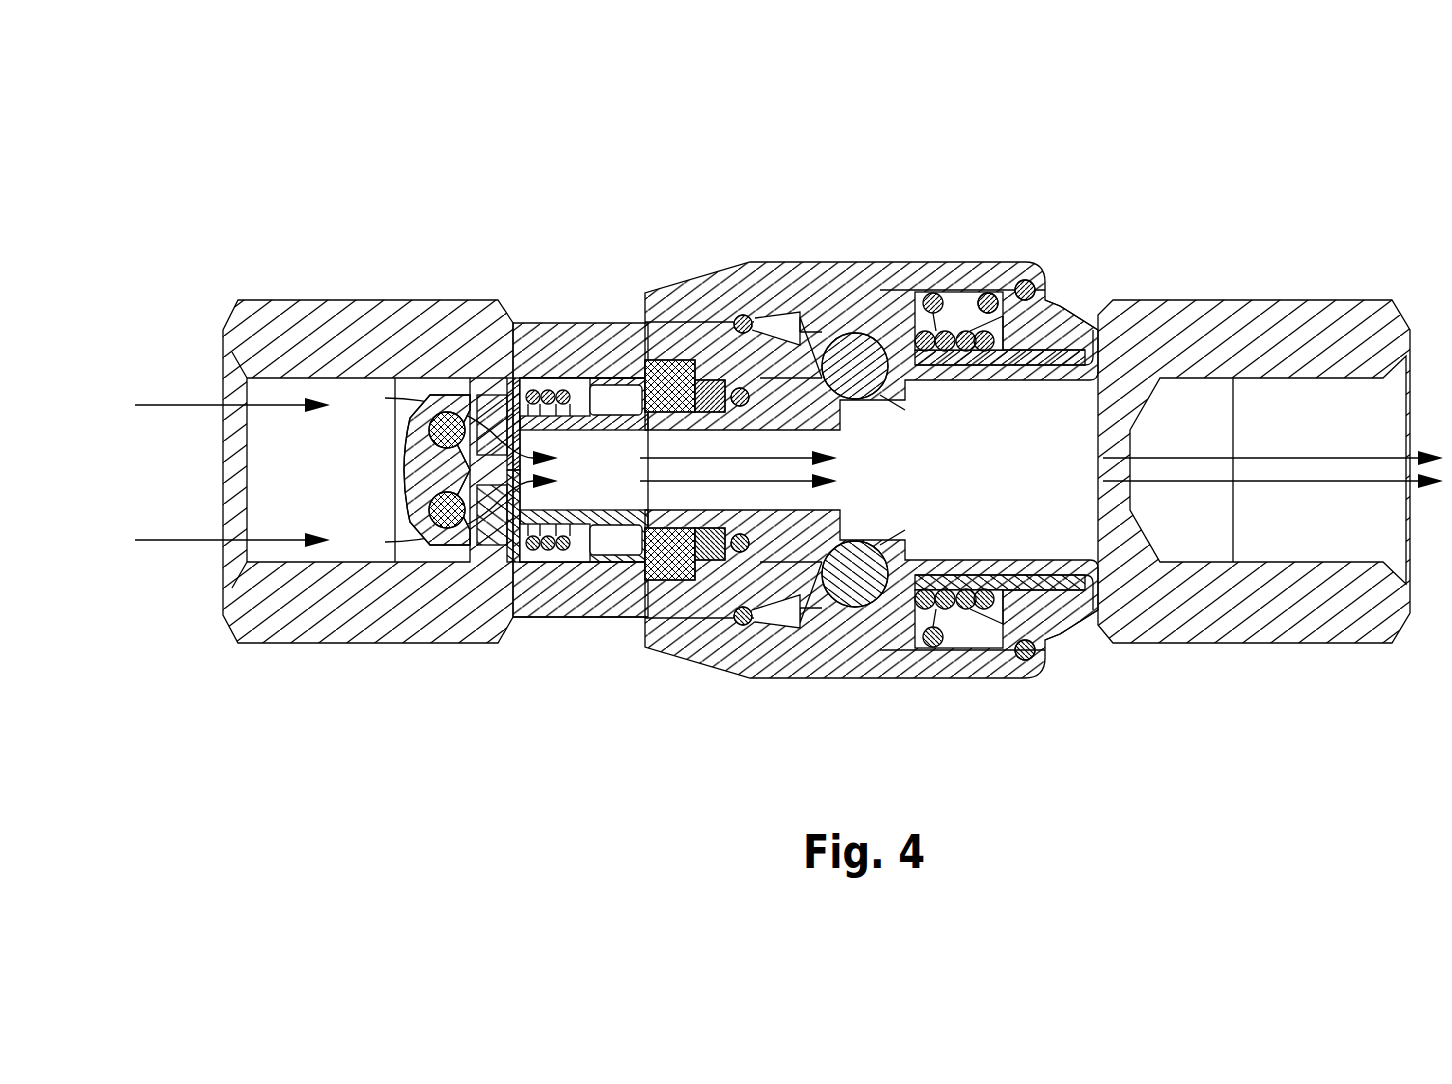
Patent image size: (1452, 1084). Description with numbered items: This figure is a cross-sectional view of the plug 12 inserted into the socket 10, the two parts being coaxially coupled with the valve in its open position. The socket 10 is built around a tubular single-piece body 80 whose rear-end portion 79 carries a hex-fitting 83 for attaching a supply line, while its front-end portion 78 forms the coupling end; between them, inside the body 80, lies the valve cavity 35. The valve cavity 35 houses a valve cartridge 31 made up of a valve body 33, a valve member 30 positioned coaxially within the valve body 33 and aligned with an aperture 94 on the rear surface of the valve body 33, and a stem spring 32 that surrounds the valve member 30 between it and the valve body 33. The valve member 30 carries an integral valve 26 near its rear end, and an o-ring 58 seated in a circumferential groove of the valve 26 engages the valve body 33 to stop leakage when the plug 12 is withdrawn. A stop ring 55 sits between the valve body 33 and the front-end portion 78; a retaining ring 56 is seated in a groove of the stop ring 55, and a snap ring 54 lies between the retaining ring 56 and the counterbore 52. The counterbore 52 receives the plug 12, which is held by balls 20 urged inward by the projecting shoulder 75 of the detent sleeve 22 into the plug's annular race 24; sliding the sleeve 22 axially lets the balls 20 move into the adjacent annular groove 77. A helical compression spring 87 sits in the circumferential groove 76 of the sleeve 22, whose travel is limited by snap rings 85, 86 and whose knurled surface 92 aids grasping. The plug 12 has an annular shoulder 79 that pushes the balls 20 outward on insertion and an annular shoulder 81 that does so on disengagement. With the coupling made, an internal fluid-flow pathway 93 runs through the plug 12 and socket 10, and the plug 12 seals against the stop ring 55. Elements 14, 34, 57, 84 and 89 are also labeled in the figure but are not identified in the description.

The socket 10 is at (590, 318).
The plug 12 is at (1318, 296).
The nozzle passage 14 is at (490, 518).
The ball detents 20 is at (858, 330).
The detent sleeve 22 is at (1012, 255).
The annular race 24 is at (890, 392).
The valve 26 is at (412, 484).
The valve member 30 is at (488, 446).
The valve cartridge 31 is at (598, 380).
The stem spring 32 is at (538, 538).
The valve body 33 is at (547, 391).
The flange 34 is at (500, 400).
The valve cavity 35 is at (582, 568).
The counterbore 52 is at (1008, 578).
The snap ring 54 is at (748, 312).
The stop ring 55 is at (660, 360).
The retaining ring 56 is at (712, 380).
The seal 57 is at (655, 580).
The o-ring 58 is at (436, 526).
The projecting shoulder 75 is at (828, 320).
The circumferential groove 76 is at (964, 298).
The annular groove 77 is at (1052, 300).
The front-end portion 78 is at (1085, 625).
The rear-end portion 79 is at (208, 463).
The single-piece body 80 is at (552, 624).
The annular shoulder 81 is at (790, 538).
The hex-fitting 83 is at (256, 292).
The backup ring 84 is at (730, 540).
The snap ring 85 is at (745, 388).
The snap ring 86 is at (802, 614).
The helical compression spring 87 is at (991, 291).
The O-ring 89 is at (1034, 281).
The knurled or grooved surface 92 is at (998, 690).
The fluid-flow pathway 93 is at (461, 392).
The aperture 94 is at (498, 542).